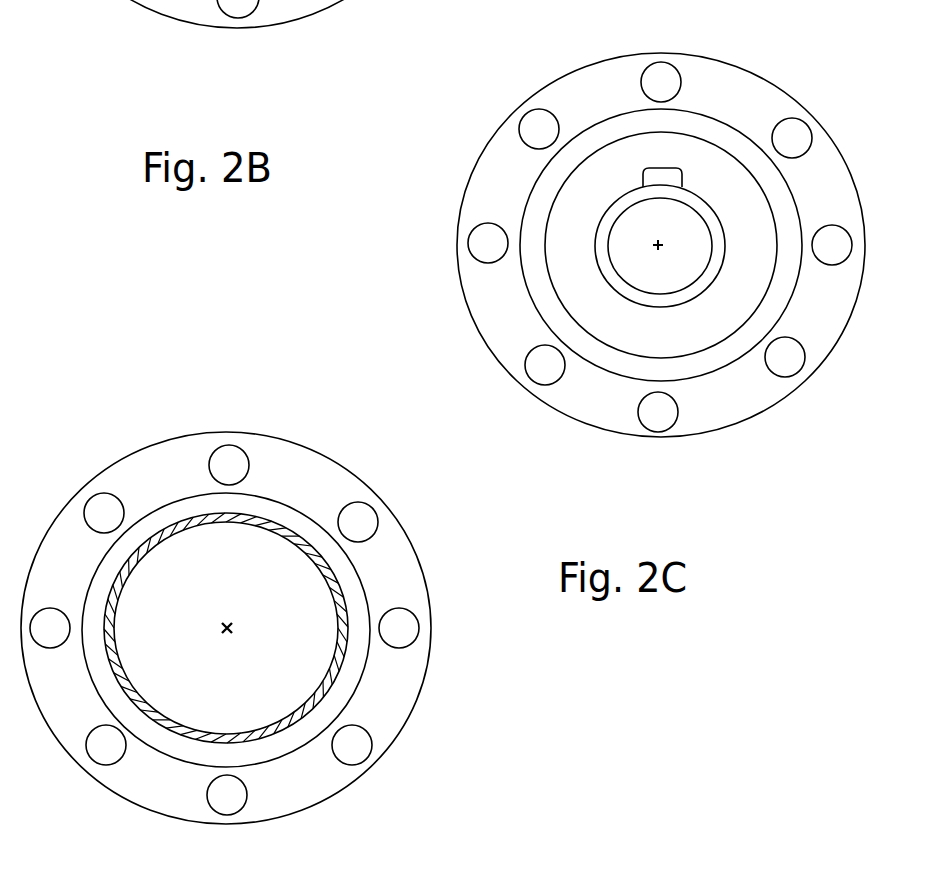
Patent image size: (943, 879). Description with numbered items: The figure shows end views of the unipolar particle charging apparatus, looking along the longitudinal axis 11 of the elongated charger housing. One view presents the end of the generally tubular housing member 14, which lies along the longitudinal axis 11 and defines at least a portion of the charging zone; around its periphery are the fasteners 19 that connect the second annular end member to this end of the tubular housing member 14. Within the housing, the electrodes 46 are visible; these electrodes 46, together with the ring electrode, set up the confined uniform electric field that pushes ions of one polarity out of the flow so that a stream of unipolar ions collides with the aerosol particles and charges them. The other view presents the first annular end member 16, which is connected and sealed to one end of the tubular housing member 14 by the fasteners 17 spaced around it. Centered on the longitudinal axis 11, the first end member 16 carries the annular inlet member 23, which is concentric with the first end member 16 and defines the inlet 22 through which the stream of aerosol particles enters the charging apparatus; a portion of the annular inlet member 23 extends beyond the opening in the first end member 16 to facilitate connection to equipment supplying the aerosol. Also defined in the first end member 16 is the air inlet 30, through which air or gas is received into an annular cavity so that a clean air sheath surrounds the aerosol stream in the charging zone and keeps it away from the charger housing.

In FIG. 2B, the tubular housing member 14 is at (197, 495).
In FIG. 2B, the fasteners 19 is at (355, 748).
In FIG. 2B, the electrodes 46 is at (295, 535).
In FIG. 2B, the longitudinal axis 11 is at (233, 633).
In FIG. 2C, the longitudinal axis 11 is at (667, 252).
In FIG. 2C, the first annular end member 16 is at (510, 342).
In FIG. 2C, the fasteners 17 is at (675, 78).
In FIG. 2C, the annular inlet member 23 is at (710, 283).
In FIG. 2C, the inlet 22 is at (664, 268).
In FIG. 2C, the air inlet 30 is at (660, 168).